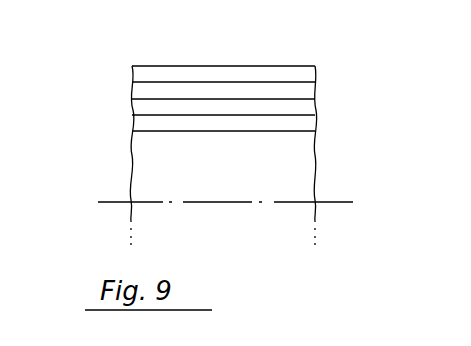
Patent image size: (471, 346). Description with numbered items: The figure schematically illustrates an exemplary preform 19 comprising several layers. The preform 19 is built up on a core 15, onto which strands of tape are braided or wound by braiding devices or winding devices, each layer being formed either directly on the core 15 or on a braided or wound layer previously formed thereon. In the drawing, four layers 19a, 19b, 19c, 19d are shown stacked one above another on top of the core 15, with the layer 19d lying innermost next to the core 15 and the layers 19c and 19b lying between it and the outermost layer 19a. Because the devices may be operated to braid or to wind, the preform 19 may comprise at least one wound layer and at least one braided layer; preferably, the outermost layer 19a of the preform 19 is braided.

The core 15 is at (316, 167).
The preform 19 is at (116, 78).
The outermost layer 19a is at (317, 71).
The layer 19b is at (317, 90).
The layer 19c is at (133, 107).
The layer 19d is at (147, 122).